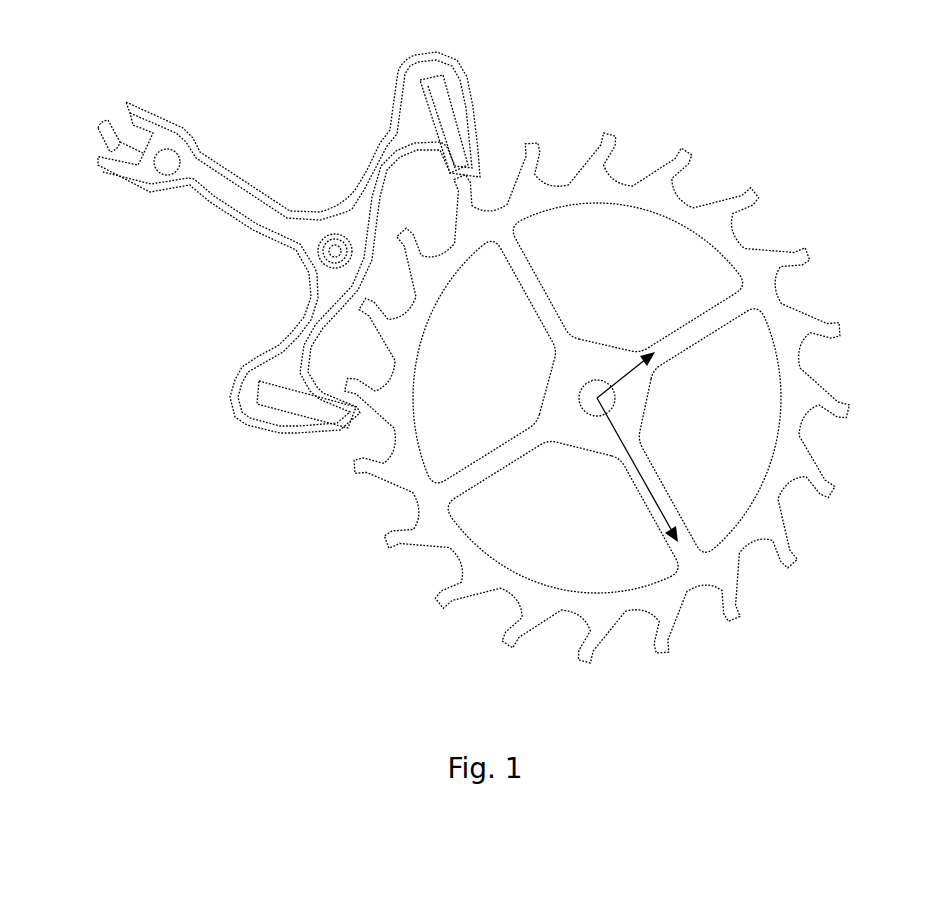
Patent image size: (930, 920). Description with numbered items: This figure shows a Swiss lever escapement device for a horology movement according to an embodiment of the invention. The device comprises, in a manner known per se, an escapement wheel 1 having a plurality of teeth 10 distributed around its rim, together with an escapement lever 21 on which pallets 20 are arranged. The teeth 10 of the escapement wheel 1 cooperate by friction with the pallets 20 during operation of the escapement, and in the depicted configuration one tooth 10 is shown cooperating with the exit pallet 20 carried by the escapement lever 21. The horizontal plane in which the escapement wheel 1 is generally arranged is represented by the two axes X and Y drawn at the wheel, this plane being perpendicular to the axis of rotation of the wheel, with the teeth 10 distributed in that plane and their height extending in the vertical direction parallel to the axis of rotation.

The escapement wheel 1 is at (678, 123).
The teeth 10 is at (415, 258).
The pallets 20 is at (461, 168).
The escapement lever 21 is at (392, 142).